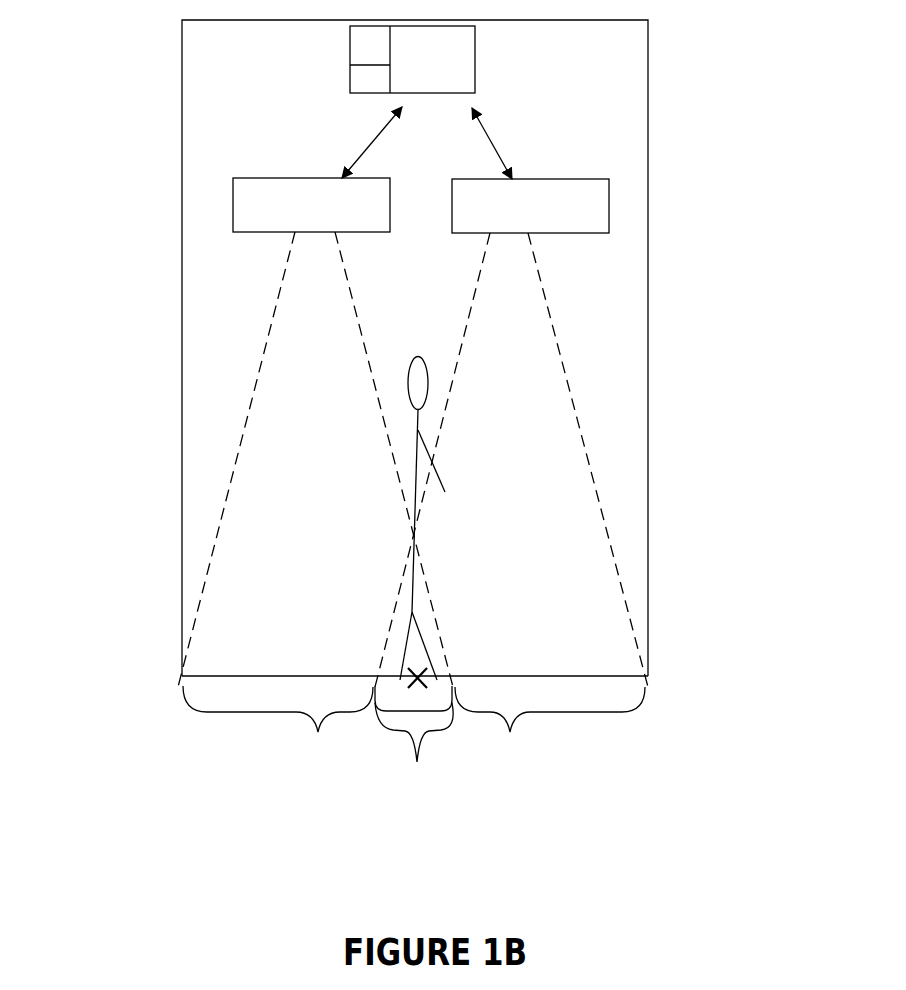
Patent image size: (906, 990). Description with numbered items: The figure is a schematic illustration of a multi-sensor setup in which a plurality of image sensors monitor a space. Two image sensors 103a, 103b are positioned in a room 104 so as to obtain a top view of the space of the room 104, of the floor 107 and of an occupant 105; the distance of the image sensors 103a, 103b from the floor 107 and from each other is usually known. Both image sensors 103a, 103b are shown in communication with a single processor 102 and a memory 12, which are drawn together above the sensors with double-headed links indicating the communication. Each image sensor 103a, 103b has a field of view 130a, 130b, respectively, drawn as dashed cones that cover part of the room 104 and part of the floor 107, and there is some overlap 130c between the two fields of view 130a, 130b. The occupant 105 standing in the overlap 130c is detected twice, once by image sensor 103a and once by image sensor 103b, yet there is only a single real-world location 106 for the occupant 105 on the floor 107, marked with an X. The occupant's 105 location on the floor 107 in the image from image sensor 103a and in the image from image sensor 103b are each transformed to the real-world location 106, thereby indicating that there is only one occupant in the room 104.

The memory 12 is at (370, 59).
The processor 102 is at (470, 65).
The image sensor 103a is at (343, 221).
The image sensor 103b is at (559, 222).
The room 104 is at (182, 593).
The occupant 105 is at (414, 480).
The real-world location 106 is at (417, 677).
The floor 107 is at (250, 677).
The field of view 130a is at (278, 729).
The field of view 130b is at (550, 731).
The overlap 130c is at (414, 750).